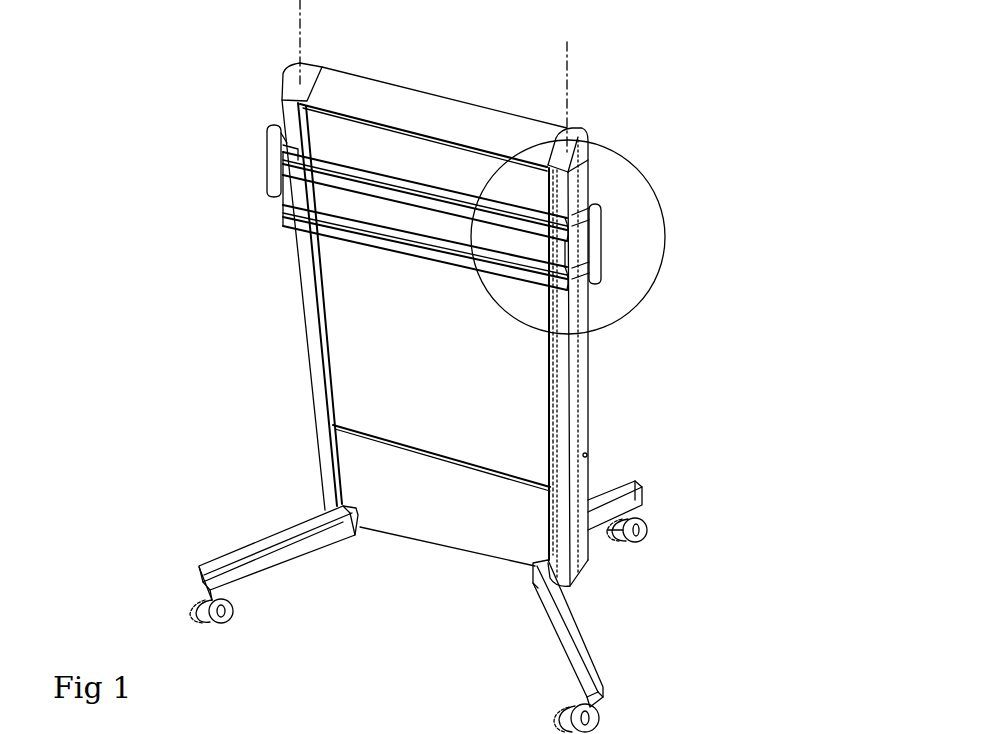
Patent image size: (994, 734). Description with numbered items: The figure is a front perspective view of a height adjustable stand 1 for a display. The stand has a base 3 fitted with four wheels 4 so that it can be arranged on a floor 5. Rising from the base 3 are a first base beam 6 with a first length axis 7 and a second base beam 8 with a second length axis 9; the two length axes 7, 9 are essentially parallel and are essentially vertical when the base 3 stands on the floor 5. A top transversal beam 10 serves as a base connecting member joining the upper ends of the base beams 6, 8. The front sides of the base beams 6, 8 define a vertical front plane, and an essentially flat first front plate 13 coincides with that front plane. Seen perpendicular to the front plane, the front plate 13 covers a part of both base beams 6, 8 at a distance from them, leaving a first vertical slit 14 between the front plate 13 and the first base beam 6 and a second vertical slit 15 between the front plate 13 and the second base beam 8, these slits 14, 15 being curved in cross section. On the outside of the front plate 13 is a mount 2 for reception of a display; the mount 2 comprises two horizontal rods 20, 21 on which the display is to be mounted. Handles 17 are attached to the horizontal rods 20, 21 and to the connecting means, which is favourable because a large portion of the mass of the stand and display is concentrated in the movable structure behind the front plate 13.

The height adjustable stand 1 is at (231, 333).
The mount 2 is at (622, 274).
The base 3 is at (606, 573).
The wheels 4 is at (613, 528).
The floor 5 is at (399, 627).
The first base beam 6 is at (287, 92).
The first length axis 7 is at (302, 36).
The second base beam 8 is at (578, 183).
The second length axis 9 is at (569, 107).
The top transversal beam 10 is at (473, 118).
The first front plate 13 is at (443, 367).
The first vertical slit 14 is at (320, 360).
The second vertical slit 15 is at (545, 435).
The handles 17 is at (277, 183).
The horizontal rod 20 is at (300, 162).
The horizontal rod 21 is at (320, 227).